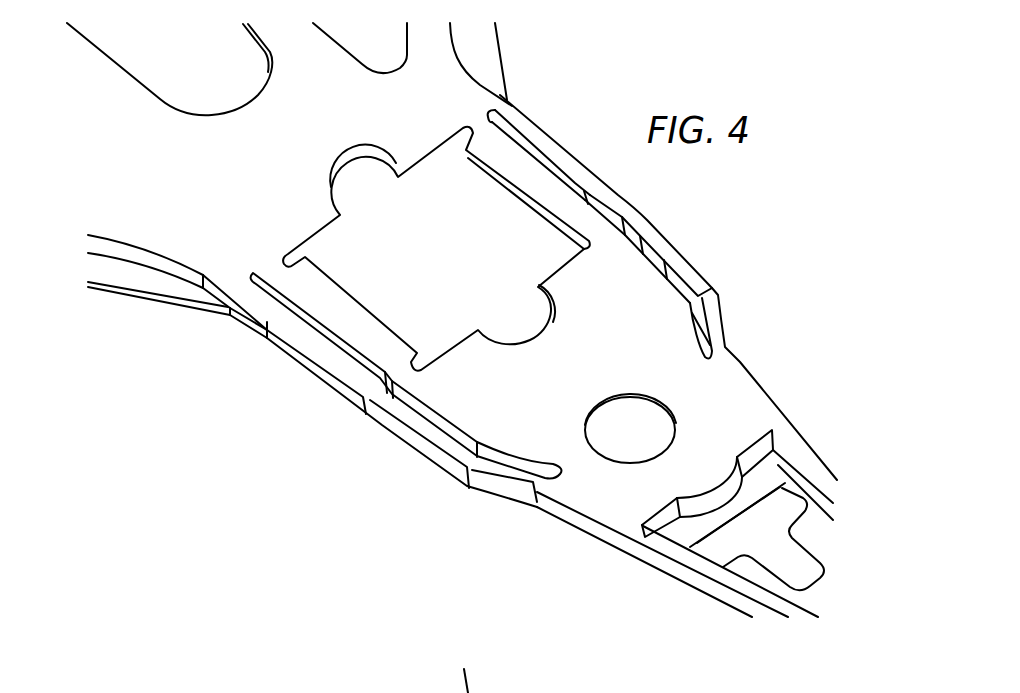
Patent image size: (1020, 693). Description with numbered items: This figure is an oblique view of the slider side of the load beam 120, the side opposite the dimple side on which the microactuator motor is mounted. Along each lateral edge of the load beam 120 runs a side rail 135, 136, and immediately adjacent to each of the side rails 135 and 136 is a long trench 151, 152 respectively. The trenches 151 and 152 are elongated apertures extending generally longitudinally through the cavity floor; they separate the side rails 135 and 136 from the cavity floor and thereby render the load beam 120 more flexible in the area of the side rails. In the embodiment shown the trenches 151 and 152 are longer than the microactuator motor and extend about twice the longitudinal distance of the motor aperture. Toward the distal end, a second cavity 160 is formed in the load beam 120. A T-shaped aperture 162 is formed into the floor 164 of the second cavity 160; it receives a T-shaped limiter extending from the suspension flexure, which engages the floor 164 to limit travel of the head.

The load beam 120 is at (213, 242).
The side rail 135 is at (301, 328).
The side rail 136 is at (620, 198).
The trench 151 is at (349, 356).
The trench 152 is at (530, 138).
The second cavity 160 is at (755, 475).
The T-shaped aperture 162 is at (782, 507).
The floor 164 is at (687, 538).